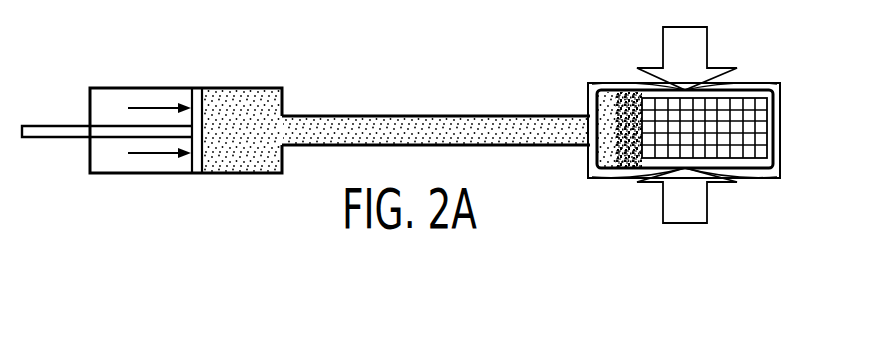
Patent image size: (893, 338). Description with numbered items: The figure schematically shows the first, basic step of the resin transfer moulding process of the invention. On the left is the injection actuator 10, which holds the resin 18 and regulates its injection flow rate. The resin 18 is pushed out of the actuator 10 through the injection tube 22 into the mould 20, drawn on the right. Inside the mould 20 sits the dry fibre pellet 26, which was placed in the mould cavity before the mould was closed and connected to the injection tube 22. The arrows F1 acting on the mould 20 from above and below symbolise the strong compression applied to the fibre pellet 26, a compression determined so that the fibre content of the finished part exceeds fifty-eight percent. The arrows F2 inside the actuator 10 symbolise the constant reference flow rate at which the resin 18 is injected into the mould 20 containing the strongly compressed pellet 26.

The injection actuator 10 is at (121, 85).
The resin 18 is at (258, 117).
The mould 20 is at (578, 93).
The injection tube 22 is at (420, 113).
The dry fibre pellet 26 is at (757, 126).
The compression arrows F1 is at (697, 50).
The reference flow rate arrows F2 is at (133, 110).